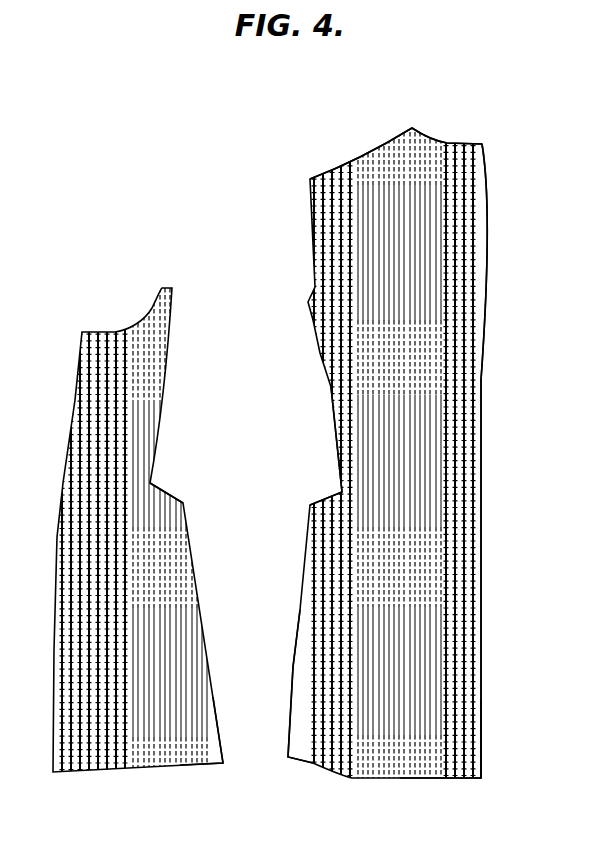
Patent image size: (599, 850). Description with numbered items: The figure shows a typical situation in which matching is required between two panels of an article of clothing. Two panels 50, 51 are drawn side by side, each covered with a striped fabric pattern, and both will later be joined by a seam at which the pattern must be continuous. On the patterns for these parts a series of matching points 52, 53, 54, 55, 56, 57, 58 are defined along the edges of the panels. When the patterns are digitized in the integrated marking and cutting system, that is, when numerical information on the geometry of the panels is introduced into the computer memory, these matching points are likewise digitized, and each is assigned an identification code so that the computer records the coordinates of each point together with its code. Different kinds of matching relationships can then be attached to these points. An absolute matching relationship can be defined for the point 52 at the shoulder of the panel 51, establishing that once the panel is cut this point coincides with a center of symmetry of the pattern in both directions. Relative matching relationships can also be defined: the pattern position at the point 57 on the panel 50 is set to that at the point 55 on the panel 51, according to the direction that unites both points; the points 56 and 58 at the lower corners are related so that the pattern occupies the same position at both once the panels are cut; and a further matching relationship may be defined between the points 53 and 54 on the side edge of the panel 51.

The panel 50 is at (138, 541).
The panel 51 is at (387, 472).
The matching point 52 is at (484, 145).
The matching point 53 is at (483, 497).
The matching point 54 is at (484, 779).
The matching point 55 is at (341, 490).
The matching point 56 is at (288, 755).
The matching point 57 is at (156, 481).
The matching point 58 is at (224, 737).